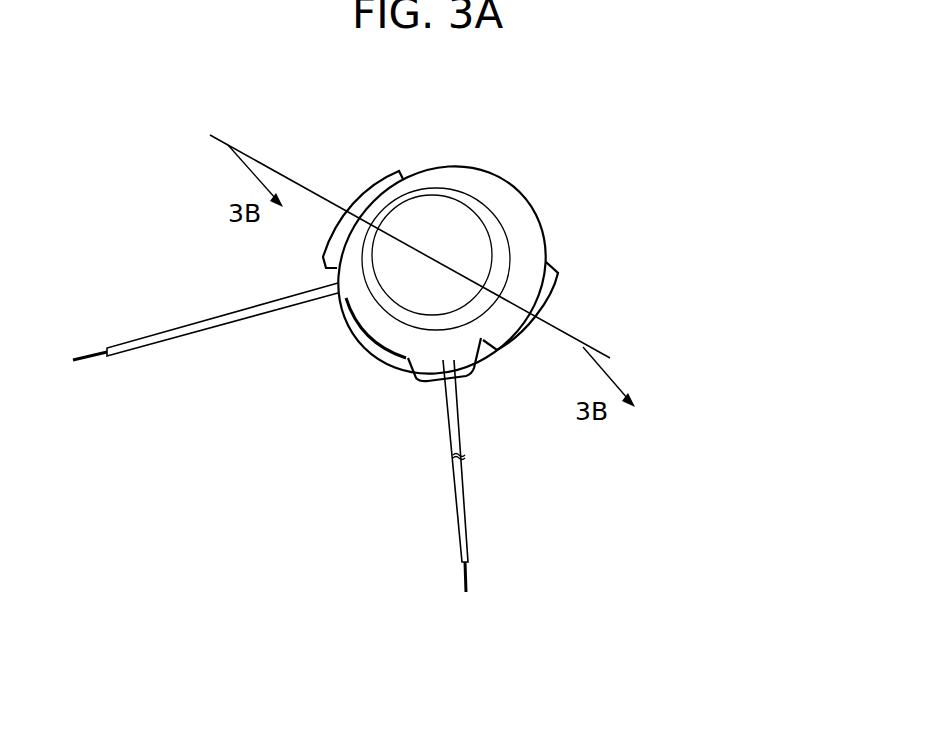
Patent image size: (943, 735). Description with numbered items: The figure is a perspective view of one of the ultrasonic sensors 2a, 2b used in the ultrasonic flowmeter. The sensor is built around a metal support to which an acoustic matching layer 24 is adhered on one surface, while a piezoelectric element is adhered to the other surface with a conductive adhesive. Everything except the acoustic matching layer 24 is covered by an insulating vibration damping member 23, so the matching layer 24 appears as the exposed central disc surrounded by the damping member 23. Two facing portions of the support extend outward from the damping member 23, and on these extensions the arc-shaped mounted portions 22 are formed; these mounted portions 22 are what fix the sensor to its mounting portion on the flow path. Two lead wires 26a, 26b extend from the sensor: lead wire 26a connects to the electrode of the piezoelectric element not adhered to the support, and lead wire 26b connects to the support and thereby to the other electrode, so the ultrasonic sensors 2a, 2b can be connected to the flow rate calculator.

The ultrasonic sensor 2a is at (534, 270).
The ultrasonic sensor 2b is at (622, 193).
The mounted portion 22 is at (388, 178).
The insulating vibration damping member 23 is at (518, 212).
The acoustic matching layer 24 is at (471, 248).
The lead wire 26a is at (298, 303).
The lead wire 26b is at (448, 428).